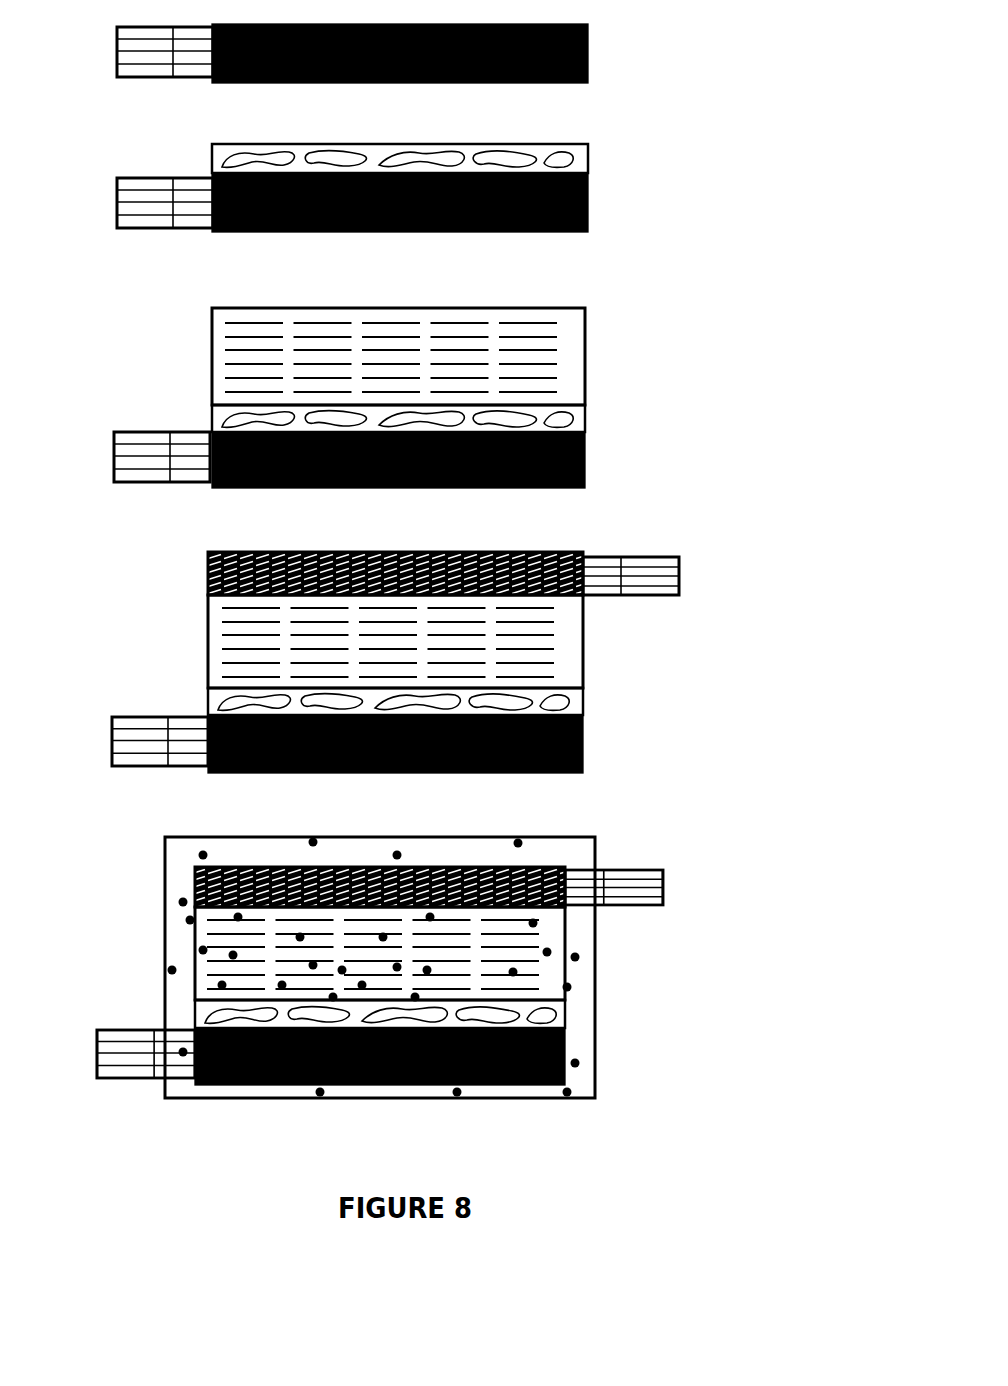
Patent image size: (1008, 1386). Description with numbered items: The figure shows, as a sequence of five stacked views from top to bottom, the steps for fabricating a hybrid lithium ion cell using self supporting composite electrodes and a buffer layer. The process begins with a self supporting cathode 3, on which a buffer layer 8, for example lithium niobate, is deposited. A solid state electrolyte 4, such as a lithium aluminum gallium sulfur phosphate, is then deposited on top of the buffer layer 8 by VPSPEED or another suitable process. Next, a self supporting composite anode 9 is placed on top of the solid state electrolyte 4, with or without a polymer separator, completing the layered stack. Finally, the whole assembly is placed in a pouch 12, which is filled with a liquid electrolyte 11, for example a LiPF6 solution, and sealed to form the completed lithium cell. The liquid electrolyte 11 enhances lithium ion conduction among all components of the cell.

The self supporting cathode 3 is at (588, 47).
The buffer layer 8 is at (588, 162).
The solid state electrolyte 4 is at (585, 352).
The self supporting composite anode 9 is at (678, 573).
The liquid electrolyte 11 is at (565, 987).
The pouch 12 is at (165, 850).